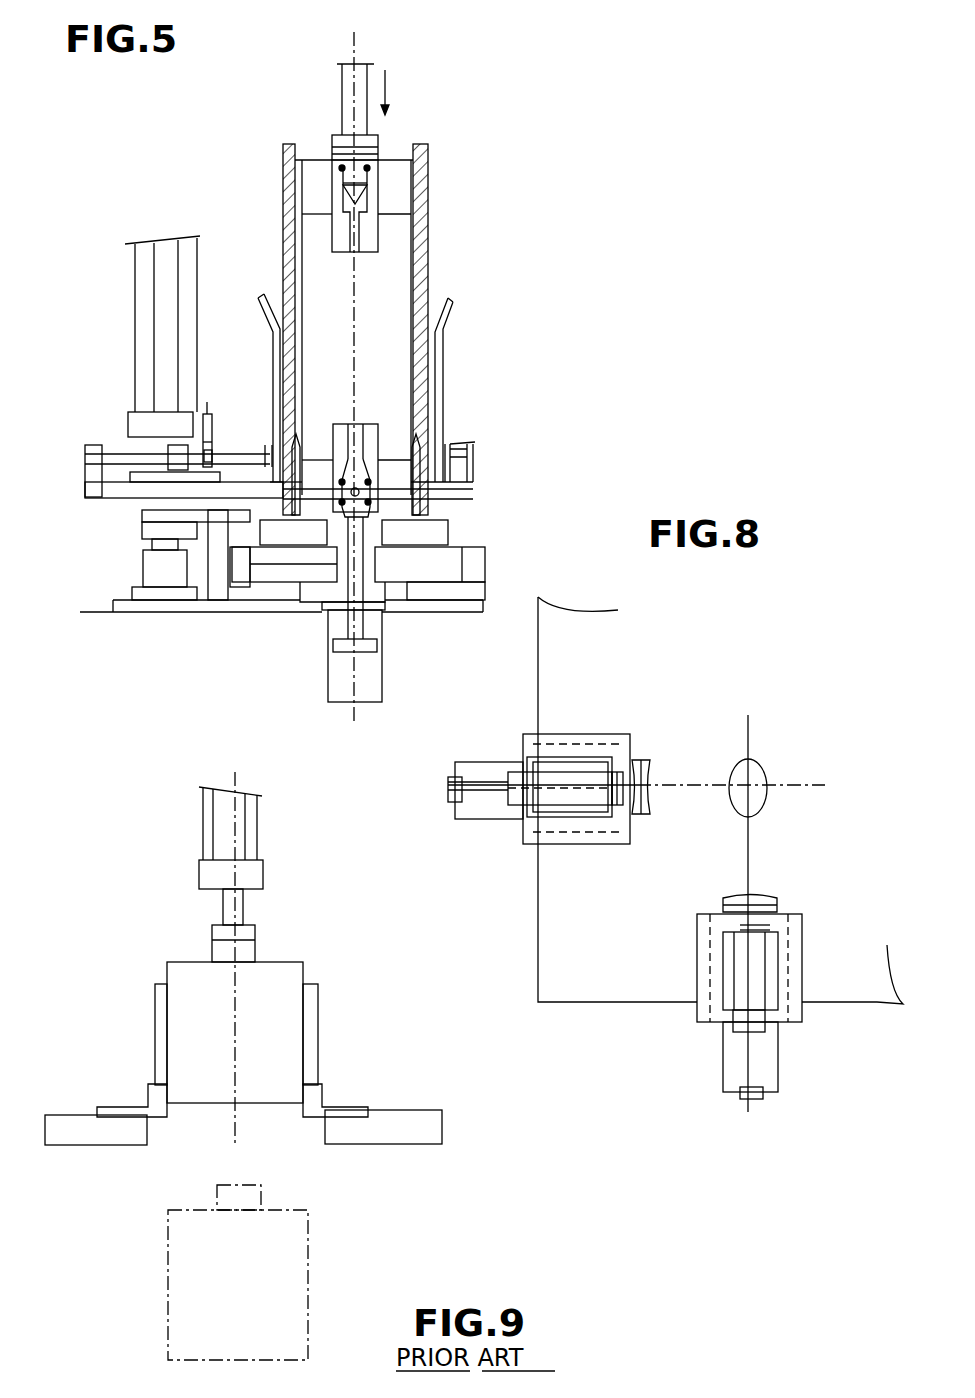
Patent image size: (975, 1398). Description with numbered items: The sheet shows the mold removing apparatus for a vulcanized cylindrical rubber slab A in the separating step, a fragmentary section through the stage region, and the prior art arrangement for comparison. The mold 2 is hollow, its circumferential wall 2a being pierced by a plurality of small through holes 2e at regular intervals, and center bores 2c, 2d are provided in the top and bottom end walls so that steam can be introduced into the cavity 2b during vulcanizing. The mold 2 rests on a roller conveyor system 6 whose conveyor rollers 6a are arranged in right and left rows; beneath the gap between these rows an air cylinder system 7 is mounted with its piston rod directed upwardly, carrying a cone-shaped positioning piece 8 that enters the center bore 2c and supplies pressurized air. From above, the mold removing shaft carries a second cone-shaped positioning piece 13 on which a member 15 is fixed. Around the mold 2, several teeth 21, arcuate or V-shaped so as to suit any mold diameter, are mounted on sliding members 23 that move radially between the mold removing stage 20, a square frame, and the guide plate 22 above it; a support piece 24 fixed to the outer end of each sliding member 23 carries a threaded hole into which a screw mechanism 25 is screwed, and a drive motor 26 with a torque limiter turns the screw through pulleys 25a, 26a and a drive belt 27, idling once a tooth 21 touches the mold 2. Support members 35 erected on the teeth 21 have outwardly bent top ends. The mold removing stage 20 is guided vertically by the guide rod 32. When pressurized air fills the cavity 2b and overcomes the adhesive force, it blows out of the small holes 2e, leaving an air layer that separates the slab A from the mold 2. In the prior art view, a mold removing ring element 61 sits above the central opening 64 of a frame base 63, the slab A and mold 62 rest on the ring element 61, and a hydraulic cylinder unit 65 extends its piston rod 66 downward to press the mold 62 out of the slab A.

In FIG. 5, the mold 2 is at (432, 143).
In FIG. 5, the circumferential wall 2a is at (407, 171).
In FIG. 5, the cavity 2b is at (379, 296).
In FIG. 5, the center bore 2c is at (362, 472).
In FIG. 5, the center bore 2d is at (350, 187).
In FIG. 5, the small through holes 2e is at (410, 271).
In FIG. 5, the roller conveyor system 6 is at (420, 549).
In FIG. 5, the conveyor rollers 6a is at (430, 521).
In FIG. 5, the air cylinder system 7 is at (364, 672).
In FIG. 5, the positioning piece 8 is at (414, 504).
In FIG. 5, the positioning piece 13 is at (354, 157).
In FIG. 5, the member 15 is at (372, 141).
In FIG. 8, the member 15 is at (752, 754).
In FIG. 8, the mold removing stage 20 is at (614, 941).
In FIG. 8, the teeth 21 is at (635, 811).
In FIG. 5, the guide plate 22 is at (154, 471).
In FIG. 5, the sliding members 23 is at (110, 482).
In FIG. 8, the sliding members 23 is at (474, 801).
In FIG. 5, the support piece 24 is at (85, 472).
In FIG. 8, the support piece 24 is at (440, 784).
In FIG. 5, the screw mechanism 25 is at (119, 442).
In FIG. 8, the screw mechanism 25 is at (477, 764).
In FIG. 5, the pulley 25a is at (205, 447).
In FIG. 5, the drive motor 26 is at (139, 419).
In FIG. 8, the drive motor 26 is at (507, 751).
In FIG. 5, the pulley 26a is at (200, 401).
In FIG. 5, the drive belt 27 is at (228, 431).
In FIG. 8, the drive belt 27 is at (612, 804).
In FIG. 5, the guide rod 32 is at (155, 294).
In FIG. 5, the support members 35 is at (439, 306).
In FIG. 5, the cylindrical rubber molding (slab) A is at (417, 222).
In FIG. 9, the cylindrical rubber molding (slab) A is at (302, 997).
In FIG. 9, the mold removing ring element 61 is at (309, 1087).
In FIG. 9, the mold 62 is at (264, 966).
In FIG. 9, the frame base 63 is at (425, 1122).
In FIG. 9, the central opening 64 is at (276, 1116).
In FIG. 9, the hydraulic cylinder unit 65 is at (229, 822).
In FIG. 9, the piston rod 66 is at (235, 901).